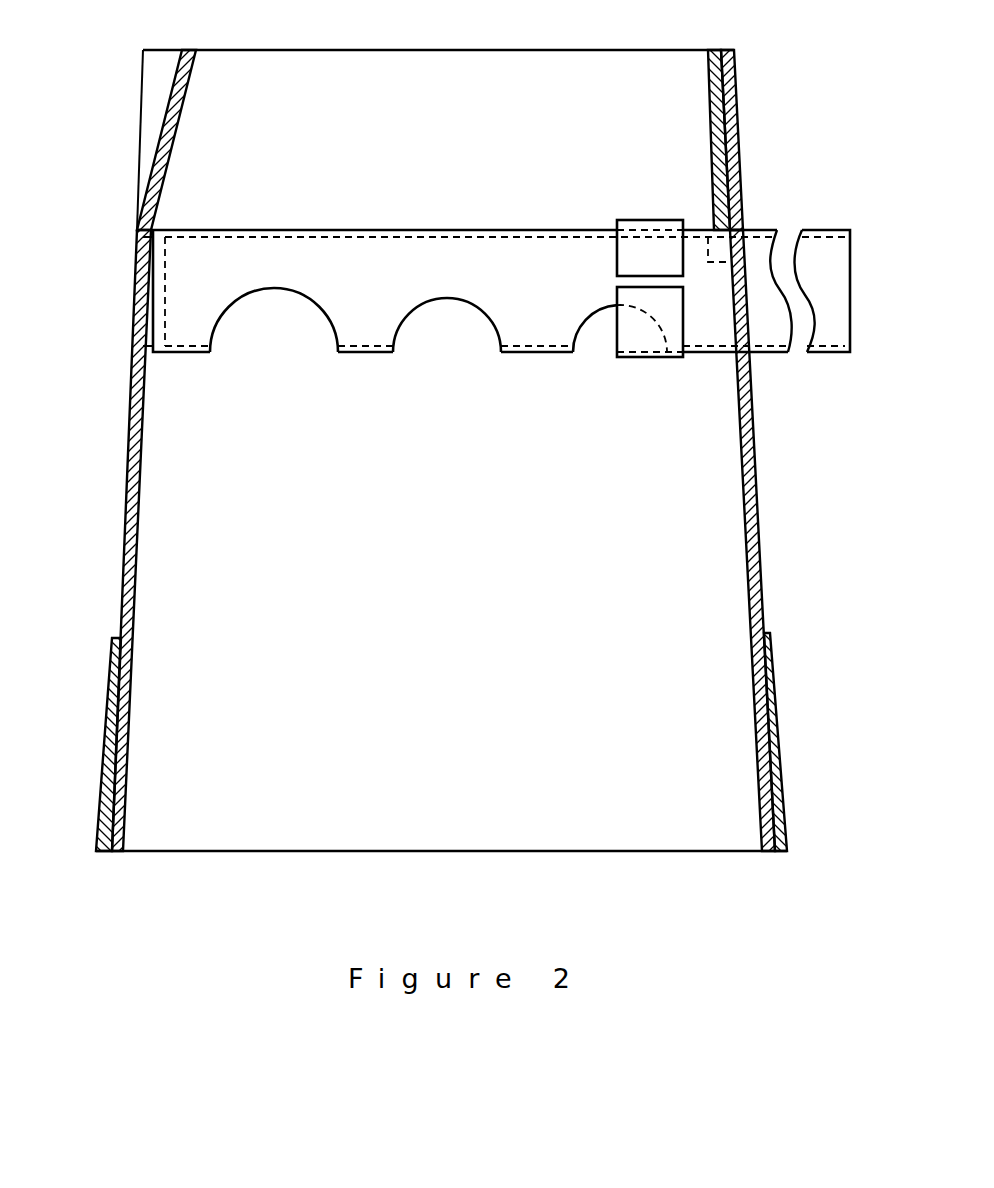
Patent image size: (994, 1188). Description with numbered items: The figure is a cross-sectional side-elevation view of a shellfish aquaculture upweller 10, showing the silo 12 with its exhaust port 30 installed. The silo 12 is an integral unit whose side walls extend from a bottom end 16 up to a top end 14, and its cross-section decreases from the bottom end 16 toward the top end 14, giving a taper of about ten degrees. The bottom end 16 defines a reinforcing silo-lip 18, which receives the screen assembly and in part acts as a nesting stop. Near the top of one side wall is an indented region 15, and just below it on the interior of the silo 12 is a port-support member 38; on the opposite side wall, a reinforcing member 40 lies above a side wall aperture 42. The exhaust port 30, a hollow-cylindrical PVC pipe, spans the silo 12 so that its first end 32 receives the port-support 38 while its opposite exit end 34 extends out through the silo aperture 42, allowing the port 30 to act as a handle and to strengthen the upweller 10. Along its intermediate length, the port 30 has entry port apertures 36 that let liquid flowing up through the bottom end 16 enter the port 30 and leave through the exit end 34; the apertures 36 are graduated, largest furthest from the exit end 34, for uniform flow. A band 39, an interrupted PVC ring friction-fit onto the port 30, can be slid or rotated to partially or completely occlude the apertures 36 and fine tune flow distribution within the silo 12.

The shellfish aquaculture upweller 10 is at (441, 450).
The silo 12 is at (147, 559).
The top end 14 is at (340, 50).
The indented region 15 is at (178, 122).
The bottom end 16 is at (125, 848).
The reinforcing silo-lip 18 is at (105, 733).
The exhaust port 30 is at (471, 276).
The first end 32 is at (170, 240).
The exit end 34 is at (837, 352).
The entry port apertures 36 is at (438, 323).
The port-support member 38 is at (170, 378).
The band 39 is at (624, 219).
The reinforcing member 40 is at (680, 103).
The side wall aperture 42 is at (703, 210).